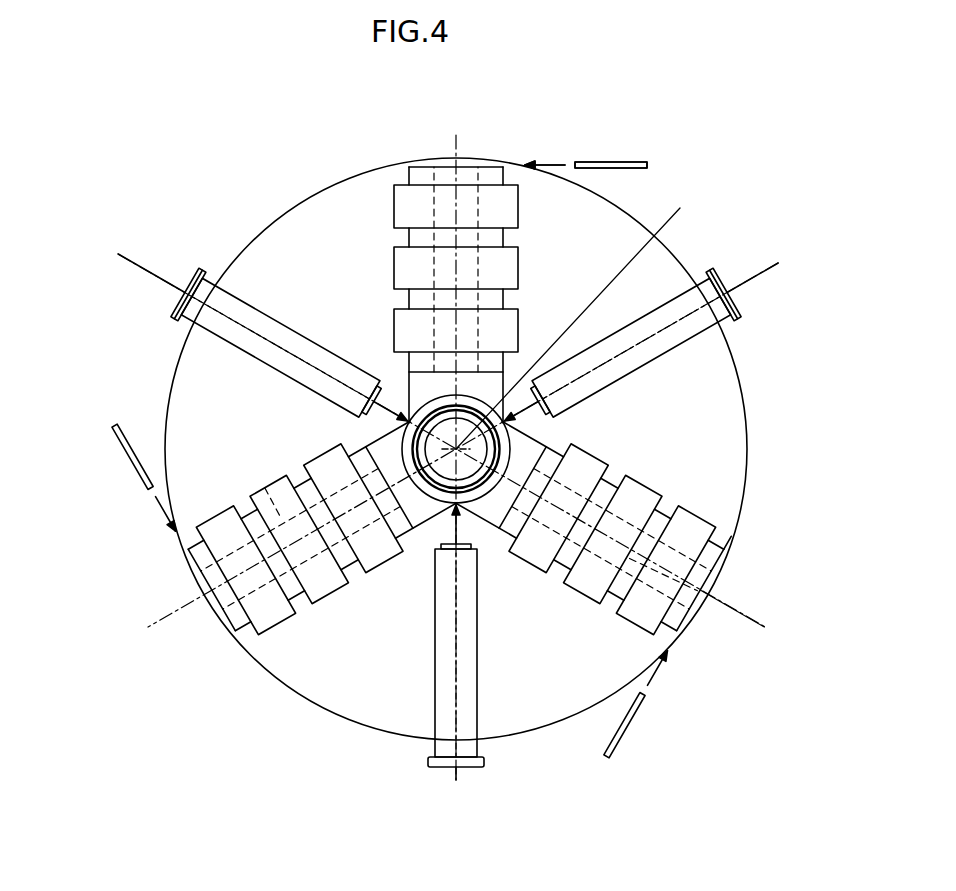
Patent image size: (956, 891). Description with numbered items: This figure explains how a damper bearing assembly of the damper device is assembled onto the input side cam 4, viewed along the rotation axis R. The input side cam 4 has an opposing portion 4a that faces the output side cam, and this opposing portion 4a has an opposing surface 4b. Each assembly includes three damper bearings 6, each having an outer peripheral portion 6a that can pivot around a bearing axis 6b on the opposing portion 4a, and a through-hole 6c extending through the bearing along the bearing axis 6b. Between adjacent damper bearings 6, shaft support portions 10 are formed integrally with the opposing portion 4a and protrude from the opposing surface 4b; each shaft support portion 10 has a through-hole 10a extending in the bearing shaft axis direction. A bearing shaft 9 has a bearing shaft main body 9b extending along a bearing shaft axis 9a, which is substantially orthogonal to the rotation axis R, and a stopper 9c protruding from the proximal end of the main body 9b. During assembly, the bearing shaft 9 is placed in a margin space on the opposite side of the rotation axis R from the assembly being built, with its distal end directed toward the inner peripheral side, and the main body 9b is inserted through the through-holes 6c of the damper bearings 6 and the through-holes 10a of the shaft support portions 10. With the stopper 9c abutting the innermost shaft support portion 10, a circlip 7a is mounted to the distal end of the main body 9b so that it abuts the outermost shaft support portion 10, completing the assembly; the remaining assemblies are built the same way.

The input side cam 4 is at (263, 228).
The opposing portion 4a is at (713, 390).
The opposing surface 4b is at (212, 388).
The damper bearing 6 is at (585, 465).
The outer peripheral portion 6a is at (572, 590).
The bearing axis 6b is at (737, 592).
The through-hole 6c is at (697, 590).
The circlip 7a is at (628, 727).
The bearing shaft 9 is at (241, 272).
The bearing shaft axis 9a is at (762, 622).
The bearing shaft main body 9b is at (285, 340).
The stopper 9c is at (160, 312).
The shaft support portion 10 is at (347, 563).
The through-hole 10a is at (265, 487).
The rotation axis R is at (574, 311).